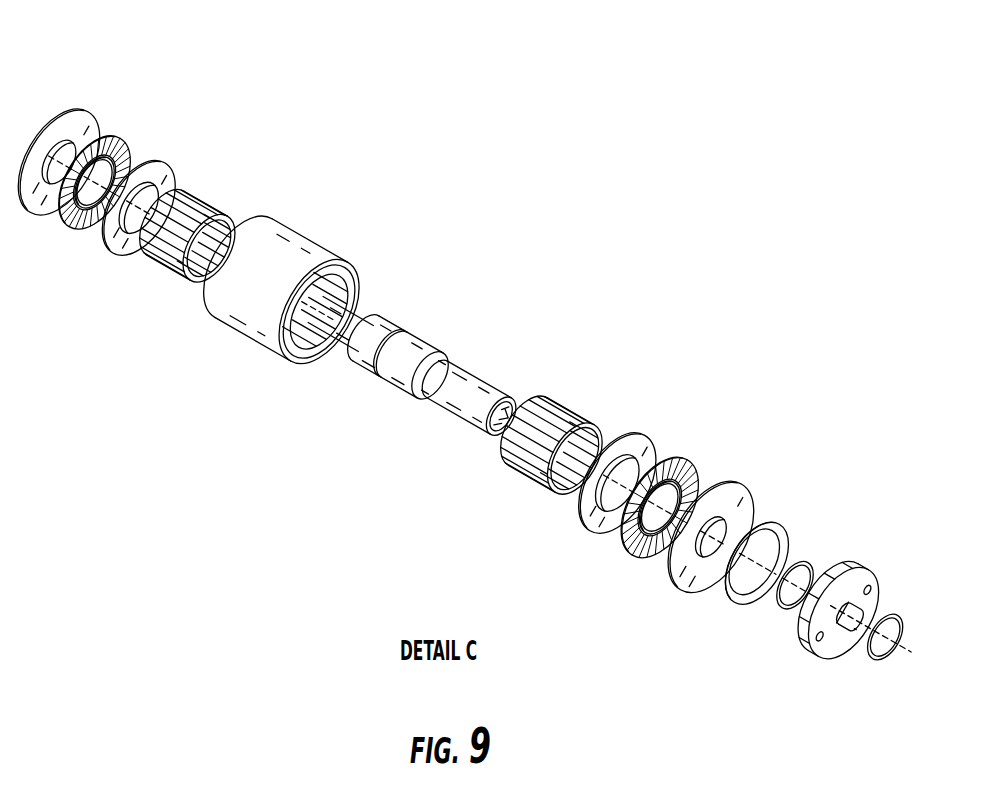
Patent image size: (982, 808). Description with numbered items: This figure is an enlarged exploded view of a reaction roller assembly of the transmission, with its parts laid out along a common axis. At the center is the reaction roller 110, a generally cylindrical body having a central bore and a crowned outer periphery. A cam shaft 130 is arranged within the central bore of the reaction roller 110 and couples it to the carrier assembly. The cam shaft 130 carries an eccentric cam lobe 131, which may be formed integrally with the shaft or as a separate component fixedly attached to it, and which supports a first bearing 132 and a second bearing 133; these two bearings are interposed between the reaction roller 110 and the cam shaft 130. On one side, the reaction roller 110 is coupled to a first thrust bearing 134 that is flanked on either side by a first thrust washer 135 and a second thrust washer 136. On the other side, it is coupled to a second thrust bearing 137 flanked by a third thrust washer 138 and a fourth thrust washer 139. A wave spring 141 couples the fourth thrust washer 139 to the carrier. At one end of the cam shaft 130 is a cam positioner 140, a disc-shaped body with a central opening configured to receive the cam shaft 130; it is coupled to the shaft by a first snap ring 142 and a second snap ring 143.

The reaction roller 110 is at (305, 242).
The cam shaft 130 is at (355, 467).
The eccentric cam lobe 131 is at (382, 381).
The first bearing 132 is at (568, 404).
The second bearing 133 is at (200, 197).
The first thrust bearing 134 is at (113, 138).
The first thrust washer 135 is at (77, 117).
The second thrust washer 136 is at (117, 253).
The second thrust bearing 137 is at (632, 558).
The third thrust washer 138 is at (582, 527).
The fourth thrust washer 139 is at (688, 587).
The cam positioner 140 is at (860, 562).
The wave spring 141 is at (778, 520).
The first snap ring 142 is at (783, 607).
The second snap ring 143 is at (877, 657).